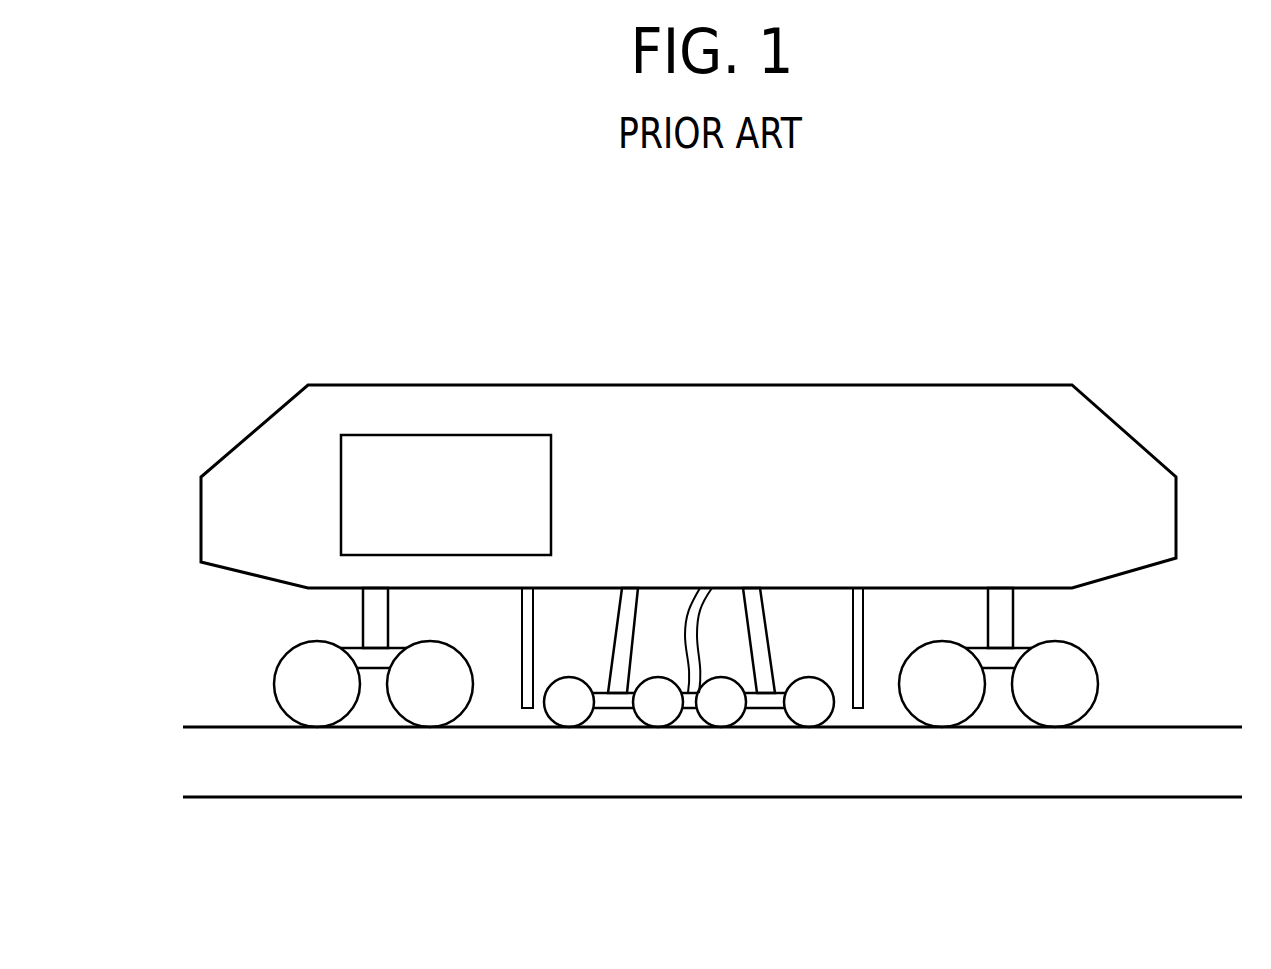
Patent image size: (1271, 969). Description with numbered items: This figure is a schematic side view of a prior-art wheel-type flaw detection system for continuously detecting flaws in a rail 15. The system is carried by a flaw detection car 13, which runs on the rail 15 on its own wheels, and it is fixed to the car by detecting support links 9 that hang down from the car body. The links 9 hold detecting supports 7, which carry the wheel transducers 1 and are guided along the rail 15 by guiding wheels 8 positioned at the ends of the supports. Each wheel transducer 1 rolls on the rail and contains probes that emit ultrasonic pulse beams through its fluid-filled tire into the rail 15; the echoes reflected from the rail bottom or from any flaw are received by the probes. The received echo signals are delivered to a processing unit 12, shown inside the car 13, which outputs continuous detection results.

The wheel transducer 1 is at (658, 705).
The detecting support 7 is at (760, 710).
The guiding wheel 8 is at (568, 705).
The detecting support link 9 is at (628, 610).
The processing unit 12 is at (428, 447).
The flaw detection car 13 is at (982, 410).
The rail 15 is at (1025, 763).